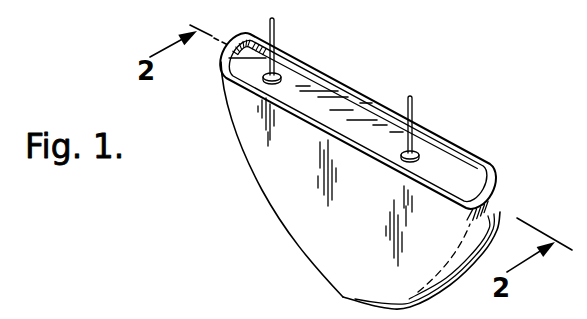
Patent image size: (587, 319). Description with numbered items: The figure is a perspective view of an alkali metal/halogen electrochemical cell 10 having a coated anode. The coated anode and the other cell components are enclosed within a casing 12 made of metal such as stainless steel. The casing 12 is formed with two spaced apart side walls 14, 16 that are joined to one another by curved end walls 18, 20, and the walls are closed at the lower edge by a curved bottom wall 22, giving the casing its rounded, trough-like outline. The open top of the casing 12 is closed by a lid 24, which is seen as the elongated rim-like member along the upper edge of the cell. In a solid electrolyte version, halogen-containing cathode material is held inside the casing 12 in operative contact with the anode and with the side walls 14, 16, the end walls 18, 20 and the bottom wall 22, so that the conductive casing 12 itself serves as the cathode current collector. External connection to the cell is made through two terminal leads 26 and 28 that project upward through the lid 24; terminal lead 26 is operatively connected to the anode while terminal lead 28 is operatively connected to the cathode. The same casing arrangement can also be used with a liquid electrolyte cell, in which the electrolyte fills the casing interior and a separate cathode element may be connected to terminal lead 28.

The alkali metal/halogen electrochemical cell 10 is at (410, 72).
The casing 12 is at (242, 181).
The side wall 14 is at (297, 195).
The side wall 16 is at (450, 142).
The curved end wall 18 is at (222, 47).
The curved end wall 20 is at (503, 199).
The curved bottom wall 22 is at (343, 298).
The lid 24 is at (315, 93).
The terminal lead 26 is at (276, 30).
The terminal lead 28 is at (414, 107).